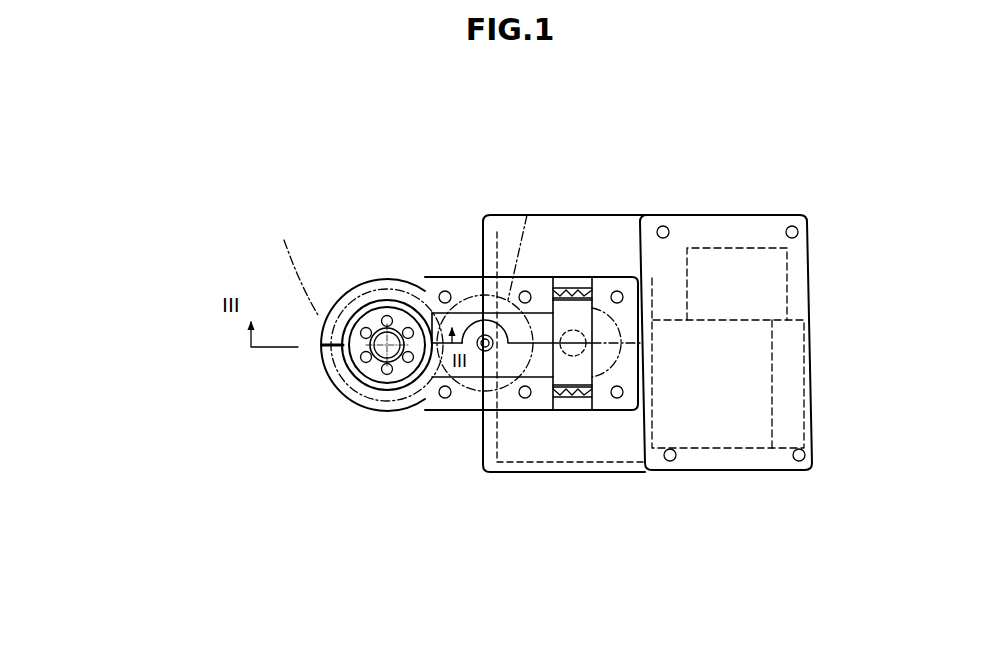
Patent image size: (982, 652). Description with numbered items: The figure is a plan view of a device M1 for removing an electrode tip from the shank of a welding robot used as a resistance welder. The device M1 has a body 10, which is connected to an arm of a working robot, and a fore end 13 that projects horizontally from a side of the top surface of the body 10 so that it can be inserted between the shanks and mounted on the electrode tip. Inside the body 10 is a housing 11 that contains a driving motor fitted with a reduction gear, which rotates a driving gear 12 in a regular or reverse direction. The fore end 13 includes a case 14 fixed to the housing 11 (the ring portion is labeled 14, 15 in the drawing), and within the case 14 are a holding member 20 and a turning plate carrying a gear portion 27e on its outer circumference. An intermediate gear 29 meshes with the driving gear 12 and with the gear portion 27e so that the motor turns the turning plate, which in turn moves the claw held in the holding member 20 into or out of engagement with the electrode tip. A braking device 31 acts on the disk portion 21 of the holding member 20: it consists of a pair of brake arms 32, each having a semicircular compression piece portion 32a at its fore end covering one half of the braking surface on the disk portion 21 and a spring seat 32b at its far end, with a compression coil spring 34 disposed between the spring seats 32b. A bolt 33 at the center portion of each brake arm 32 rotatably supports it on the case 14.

The body 10 is at (575, 468).
The housing 11 is at (738, 220).
The driving gear 12 is at (612, 415).
The fore end 13 is at (467, 434).
The case 14 is at (382, 429).
The bearing portion 15 is at (432, 410).
The holding member 20 is at (322, 399).
The disk portion 21 is at (350, 357).
The gear portion 27e is at (288, 263).
The intermediate gear 29 is at (527, 215).
The braking device 31 is at (600, 323).
The brake arm 32 is at (350, 338).
The compression piece portion 32a is at (348, 313).
The spring seat 32b is at (582, 284).
The bolt 33 is at (485, 338).
The compression coil spring 34 is at (563, 400).
The device for removing an electrode tip M1 is at (578, 188).